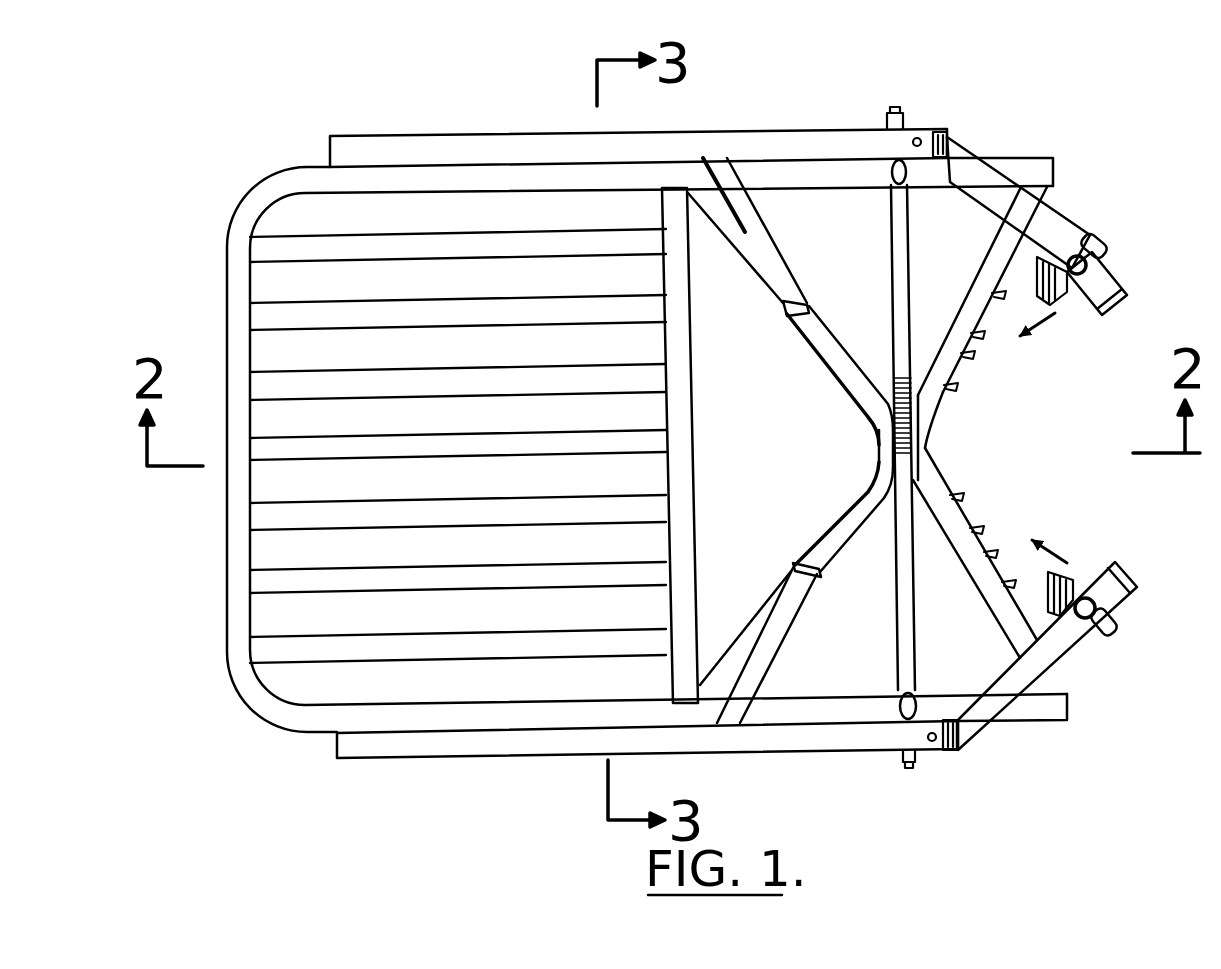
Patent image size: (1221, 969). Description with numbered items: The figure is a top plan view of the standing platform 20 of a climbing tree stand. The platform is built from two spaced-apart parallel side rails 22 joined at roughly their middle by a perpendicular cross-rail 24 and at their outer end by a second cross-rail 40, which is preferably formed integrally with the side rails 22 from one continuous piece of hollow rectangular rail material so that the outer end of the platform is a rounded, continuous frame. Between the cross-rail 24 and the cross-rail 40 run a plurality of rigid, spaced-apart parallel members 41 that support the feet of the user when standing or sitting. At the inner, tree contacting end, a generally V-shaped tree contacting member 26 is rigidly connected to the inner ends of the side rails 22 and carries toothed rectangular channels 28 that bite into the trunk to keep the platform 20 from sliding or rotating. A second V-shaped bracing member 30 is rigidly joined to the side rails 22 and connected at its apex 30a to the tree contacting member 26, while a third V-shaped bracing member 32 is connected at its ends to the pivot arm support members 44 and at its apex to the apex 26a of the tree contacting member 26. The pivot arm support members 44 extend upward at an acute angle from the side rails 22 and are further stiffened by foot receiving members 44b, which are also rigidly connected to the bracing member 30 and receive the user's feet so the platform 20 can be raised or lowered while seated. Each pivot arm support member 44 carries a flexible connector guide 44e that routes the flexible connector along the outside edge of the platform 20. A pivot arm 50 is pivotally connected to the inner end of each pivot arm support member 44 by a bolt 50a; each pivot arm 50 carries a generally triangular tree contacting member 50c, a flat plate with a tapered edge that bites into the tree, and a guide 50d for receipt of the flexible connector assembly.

The standing platform 20 is at (523, 68).
The side rails 22 is at (995, 163).
The cross-rail 24 is at (698, 486).
The tree contacting member 26 is at (980, 422).
The apex of tree contacting member 26a is at (918, 444).
The rectangular channels 28 is at (998, 330).
The bracing member 30 is at (840, 412).
The apex of bracing member 30a is at (878, 442).
The bracing member 32 is at (915, 283).
The second cross-rail 40 is at (226, 522).
The parallel members 41 is at (428, 242).
The pivot arm support members 44 is at (675, 132).
The foot receiving members 44b is at (767, 253).
The flexible connector guide 44e is at (878, 150).
The pivot arm 50 is at (1057, 217).
The bolts 50a is at (920, 140).
The tree contacting members 50c is at (1075, 306).
The guide 50d is at (1112, 240).